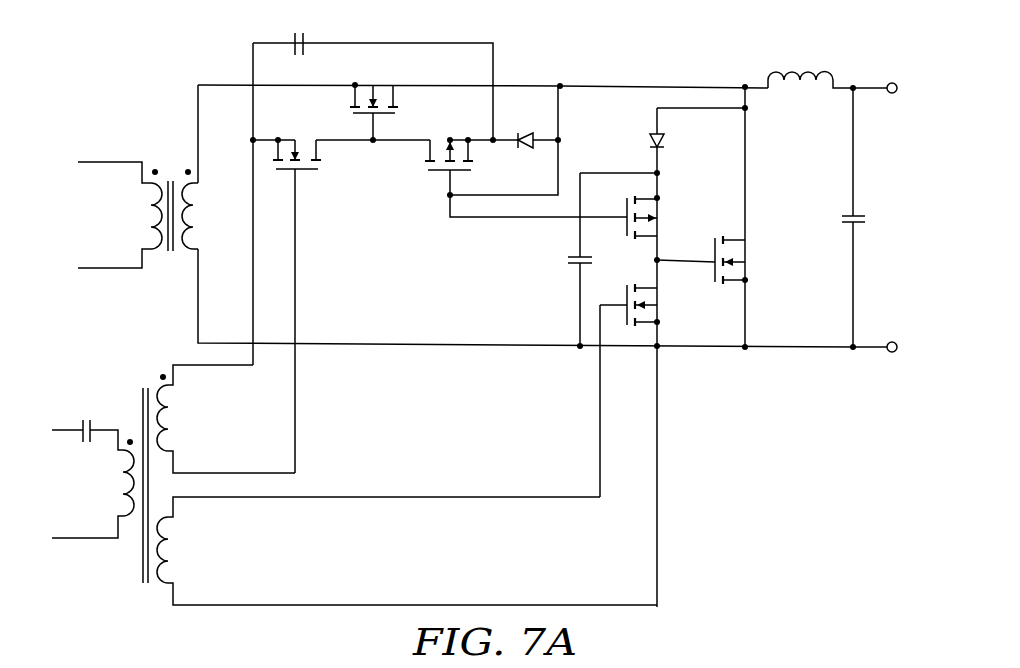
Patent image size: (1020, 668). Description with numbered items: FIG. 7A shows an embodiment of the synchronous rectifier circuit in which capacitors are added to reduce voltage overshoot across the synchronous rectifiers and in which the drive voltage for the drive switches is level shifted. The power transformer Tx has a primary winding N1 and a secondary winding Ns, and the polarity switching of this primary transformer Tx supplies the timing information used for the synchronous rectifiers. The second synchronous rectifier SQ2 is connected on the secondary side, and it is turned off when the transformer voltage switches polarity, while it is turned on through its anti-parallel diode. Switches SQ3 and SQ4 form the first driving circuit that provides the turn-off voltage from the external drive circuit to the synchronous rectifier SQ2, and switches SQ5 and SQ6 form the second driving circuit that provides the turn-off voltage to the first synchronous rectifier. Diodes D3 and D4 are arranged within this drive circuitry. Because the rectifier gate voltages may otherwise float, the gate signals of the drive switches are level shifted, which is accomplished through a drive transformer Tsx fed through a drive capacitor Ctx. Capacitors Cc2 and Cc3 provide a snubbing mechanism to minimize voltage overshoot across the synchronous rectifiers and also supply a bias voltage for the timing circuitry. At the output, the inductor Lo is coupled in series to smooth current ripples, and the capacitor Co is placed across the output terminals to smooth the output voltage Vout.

The capacitor Cc2 is at (297, 32).
The second synchronous rectifier SQ2 is at (374, 101).
The switch SQ4 is at (297, 142).
The switch SQ3 is at (605, 200).
The diode D3 is at (526, 127).
The diode D4 is at (672, 143).
The switch SQ6 is at (662, 217).
The switch SQ5 is at (649, 305).
The capacitor Cc3 is at (561, 263).
The inductor Lo is at (810, 68).
The capacitor Co is at (840, 221).
The output voltage Vout is at (911, 217).
The primary transformer Tx is at (170, 198).
The primary winding N1 is at (120, 215).
The secondary winding Ns is at (201, 216).
The drive transformer Tsx is at (395, 477).
The drive capacitor Ctx is at (93, 467).